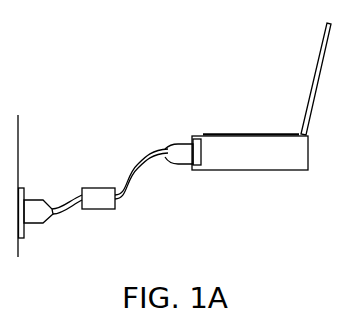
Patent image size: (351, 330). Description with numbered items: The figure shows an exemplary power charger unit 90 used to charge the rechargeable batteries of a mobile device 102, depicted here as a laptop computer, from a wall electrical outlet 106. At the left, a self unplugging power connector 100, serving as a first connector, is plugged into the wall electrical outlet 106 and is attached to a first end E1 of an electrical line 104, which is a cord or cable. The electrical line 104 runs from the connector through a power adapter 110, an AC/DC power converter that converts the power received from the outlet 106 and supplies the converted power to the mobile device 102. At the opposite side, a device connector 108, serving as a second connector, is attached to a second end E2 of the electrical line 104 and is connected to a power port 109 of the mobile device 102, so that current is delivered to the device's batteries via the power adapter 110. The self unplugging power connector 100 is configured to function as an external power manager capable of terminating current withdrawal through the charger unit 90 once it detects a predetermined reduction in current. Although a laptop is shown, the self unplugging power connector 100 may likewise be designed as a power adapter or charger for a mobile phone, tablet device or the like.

The power charger unit 90 is at (77, 112).
The self unplugging power connector 100 is at (28, 224).
The mobile device 102 is at (282, 166).
The electrical line 104 is at (160, 152).
The wall electrical outlet 106 is at (26, 188).
The device connector 108 is at (177, 143).
The power port 109 is at (203, 156).
The power adapter 110 is at (99, 188).
The first end E1 is at (53, 210).
The second end E2 is at (165, 161).